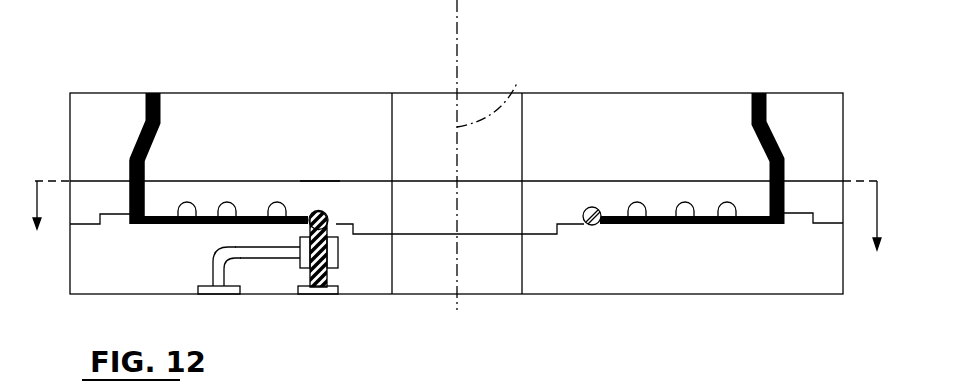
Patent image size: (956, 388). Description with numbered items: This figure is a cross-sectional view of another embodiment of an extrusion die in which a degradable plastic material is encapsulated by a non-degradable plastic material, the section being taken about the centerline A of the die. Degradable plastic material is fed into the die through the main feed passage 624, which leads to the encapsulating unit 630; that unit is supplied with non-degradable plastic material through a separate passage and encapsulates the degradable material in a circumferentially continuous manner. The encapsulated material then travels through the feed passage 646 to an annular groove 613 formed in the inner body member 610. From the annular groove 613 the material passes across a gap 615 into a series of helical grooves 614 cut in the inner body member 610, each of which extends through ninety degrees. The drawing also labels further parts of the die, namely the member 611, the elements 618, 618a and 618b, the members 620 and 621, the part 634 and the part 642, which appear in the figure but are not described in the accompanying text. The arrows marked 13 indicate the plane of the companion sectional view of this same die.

The inner body member 610 is at (317, 188).
The housing 611 is at (75, 203).
The annular groove 613 is at (590, 210).
The helical grooves 614 is at (272, 205).
The gap 615 is at (612, 220).
The seal 618 is at (657, 224).
The seal lower portion 618a is at (205, 228).
The seal upper portion 618b is at (128, 198).
The right flange 620 is at (757, 93).
The left flange 621 is at (120, 106).
The main feed passage 624 is at (306, 278).
The encapsulating unit 630 is at (213, 279).
The side block 634 is at (326, 272).
The arm 642 is at (308, 229).
The feed passage 646 is at (330, 222).
The axis A is at (493, 155).
The section line 13 is at (454, 230).